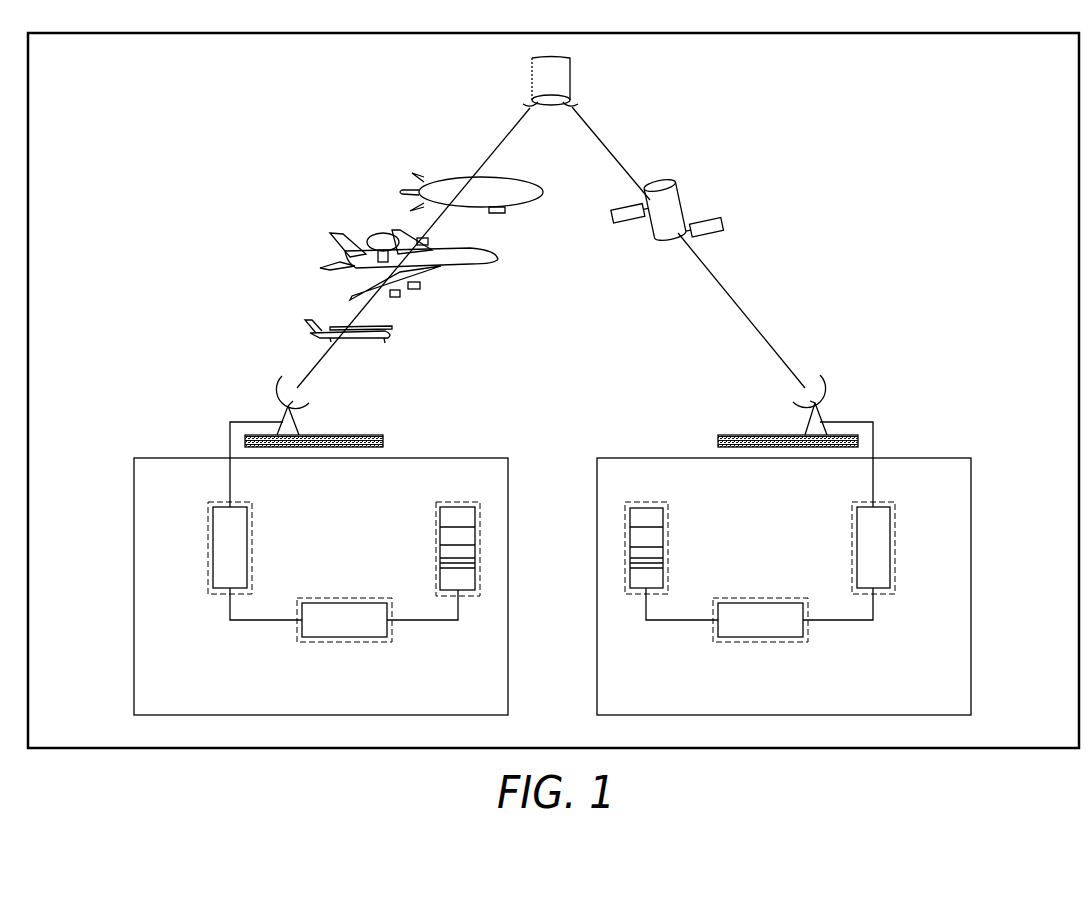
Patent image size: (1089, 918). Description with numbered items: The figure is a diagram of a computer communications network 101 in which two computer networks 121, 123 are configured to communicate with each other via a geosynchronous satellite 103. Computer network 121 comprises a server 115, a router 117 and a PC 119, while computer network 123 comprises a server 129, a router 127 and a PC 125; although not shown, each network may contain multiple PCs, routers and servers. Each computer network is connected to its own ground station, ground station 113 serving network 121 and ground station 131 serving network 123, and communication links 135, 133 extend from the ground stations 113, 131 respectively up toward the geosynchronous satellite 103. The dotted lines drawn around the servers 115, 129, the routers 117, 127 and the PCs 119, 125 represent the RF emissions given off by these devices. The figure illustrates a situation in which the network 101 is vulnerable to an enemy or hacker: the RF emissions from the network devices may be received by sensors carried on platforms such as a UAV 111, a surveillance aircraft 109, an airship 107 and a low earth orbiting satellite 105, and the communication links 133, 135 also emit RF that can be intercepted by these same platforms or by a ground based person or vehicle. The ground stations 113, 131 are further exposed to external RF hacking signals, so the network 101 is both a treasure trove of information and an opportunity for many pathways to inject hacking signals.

The computer communications network 101 is at (908, 157).
The geosynchronous satellite 103 is at (571, 72).
The low earth orbiting satellite 105 is at (672, 183).
The airship 107 is at (452, 180).
The surveillance aircraft 109 is at (388, 234).
The UAV 111 is at (327, 330).
The ground station 113 is at (830, 392).
The server 115 is at (890, 553).
The router 117 is at (803, 632).
The PC 119 is at (630, 528).
The computer network 121 is at (971, 587).
The computer network 123 is at (134, 643).
The PC 125 is at (475, 552).
The router 127 is at (387, 633).
The server 129 is at (213, 549).
The ground station 131 is at (277, 395).
The communication link 133 is at (317, 361).
The communication link 135 is at (743, 312).